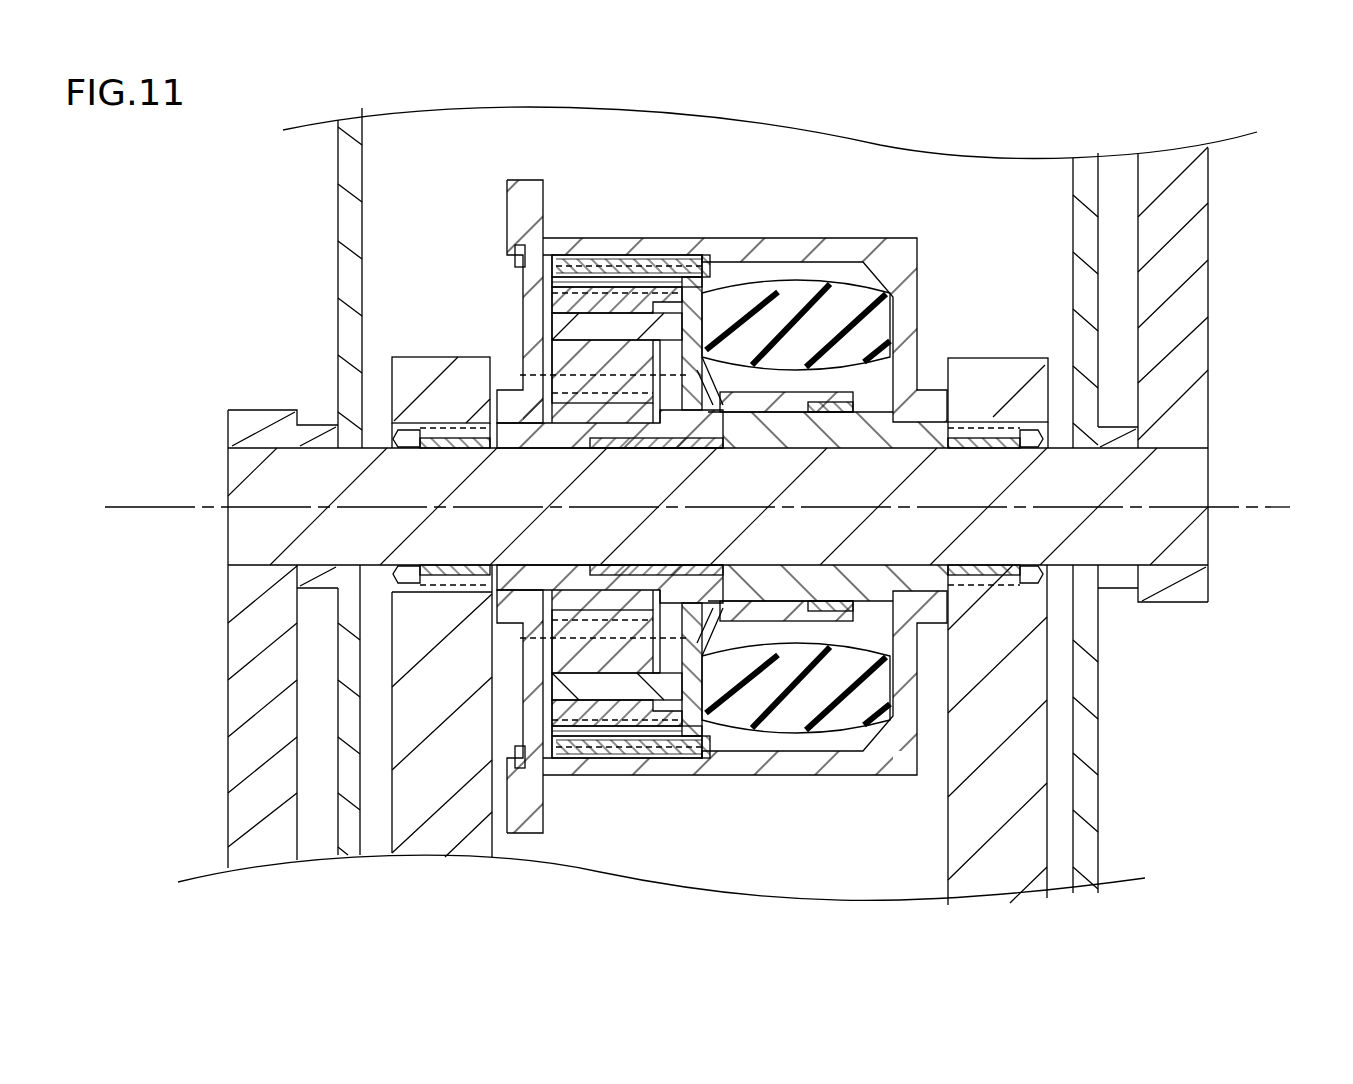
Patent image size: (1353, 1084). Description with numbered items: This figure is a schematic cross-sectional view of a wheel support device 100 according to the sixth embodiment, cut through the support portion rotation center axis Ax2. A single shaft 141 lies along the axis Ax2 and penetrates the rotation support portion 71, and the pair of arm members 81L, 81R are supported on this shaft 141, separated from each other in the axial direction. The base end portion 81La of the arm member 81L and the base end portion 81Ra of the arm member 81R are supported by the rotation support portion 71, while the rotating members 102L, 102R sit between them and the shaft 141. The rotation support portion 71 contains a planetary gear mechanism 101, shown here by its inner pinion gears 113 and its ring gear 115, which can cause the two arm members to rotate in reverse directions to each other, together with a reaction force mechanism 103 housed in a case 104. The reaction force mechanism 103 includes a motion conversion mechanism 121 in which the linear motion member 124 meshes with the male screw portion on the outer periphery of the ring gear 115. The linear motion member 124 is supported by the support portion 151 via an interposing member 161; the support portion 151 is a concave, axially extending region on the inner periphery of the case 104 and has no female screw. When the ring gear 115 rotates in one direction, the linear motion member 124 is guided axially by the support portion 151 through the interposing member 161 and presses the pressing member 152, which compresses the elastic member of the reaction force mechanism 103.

The drive unit 100 is at (1193, 99).
The support portion rotation center axis Ax2 is at (1300, 498).
The shaft 141 is at (1200, 541).
The arm member 81L is at (447, 843).
The arm member 81R is at (988, 885).
The base end portion 81La is at (415, 357).
The base end portion 81Ra is at (990, 358).
The rotating member 102L is at (462, 425).
The rotating member 102R is at (790, 432).
The rotation support portion 71 is at (889, 230).
The case 104 is at (777, 240).
The interposing member 161 is at (568, 256).
The motion conversion mechanism 121 is at (627, 447).
The linear motion member 124 is at (603, 280).
The ring gear 115 is at (552, 300).
The planetary gear mechanism 101 is at (637, 320).
The inner pinion gears 113 is at (558, 363).
The support portion 151 is at (723, 287).
The pressing member 152 is at (716, 258).
The reaction force mechanism 103 is at (848, 283).